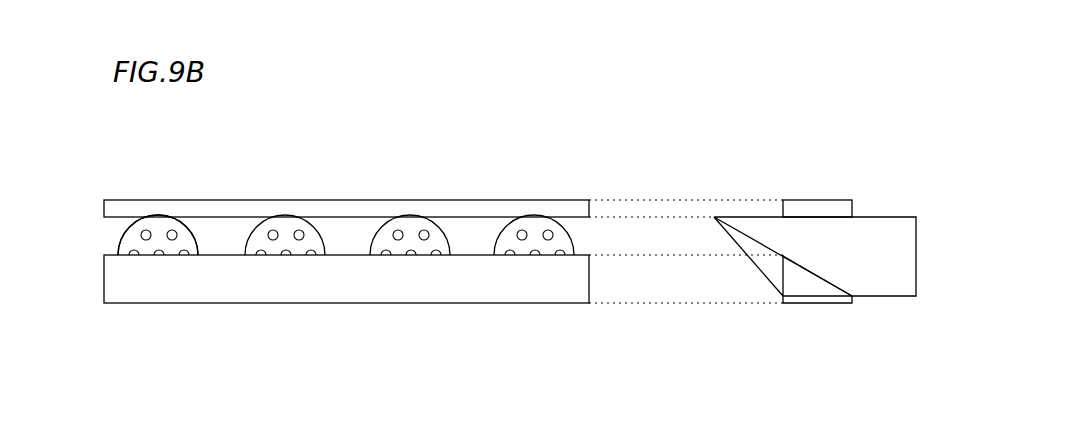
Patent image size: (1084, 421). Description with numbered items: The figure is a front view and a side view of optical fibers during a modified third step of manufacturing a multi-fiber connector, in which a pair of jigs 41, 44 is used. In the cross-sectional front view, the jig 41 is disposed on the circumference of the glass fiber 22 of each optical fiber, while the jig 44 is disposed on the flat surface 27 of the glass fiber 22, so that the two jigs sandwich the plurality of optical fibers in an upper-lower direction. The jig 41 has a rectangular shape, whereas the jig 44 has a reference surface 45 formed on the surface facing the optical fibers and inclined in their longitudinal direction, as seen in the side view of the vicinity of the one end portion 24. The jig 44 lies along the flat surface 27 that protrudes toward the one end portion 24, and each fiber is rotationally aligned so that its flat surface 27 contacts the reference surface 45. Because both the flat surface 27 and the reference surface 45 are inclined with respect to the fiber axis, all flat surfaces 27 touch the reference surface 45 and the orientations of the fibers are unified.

The glass fiber 22 is at (120, 237).
The one end portion 24 is at (160, 216).
The flat surface 27 is at (130, 243).
The jig 41 is at (449, 200).
The jig 44 is at (418, 303).
The reference surface 45 is at (840, 275).